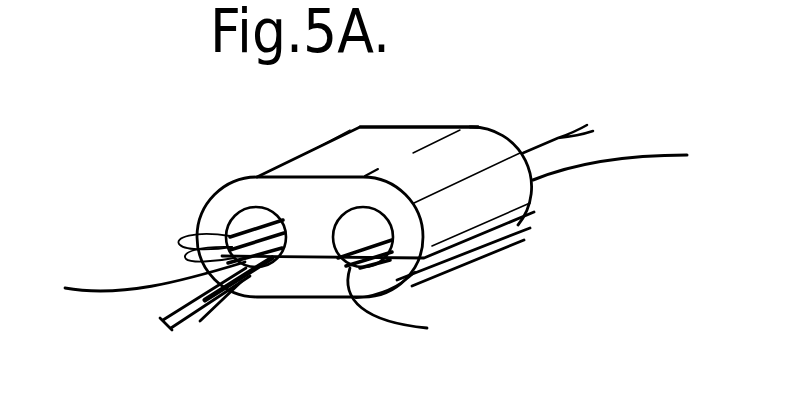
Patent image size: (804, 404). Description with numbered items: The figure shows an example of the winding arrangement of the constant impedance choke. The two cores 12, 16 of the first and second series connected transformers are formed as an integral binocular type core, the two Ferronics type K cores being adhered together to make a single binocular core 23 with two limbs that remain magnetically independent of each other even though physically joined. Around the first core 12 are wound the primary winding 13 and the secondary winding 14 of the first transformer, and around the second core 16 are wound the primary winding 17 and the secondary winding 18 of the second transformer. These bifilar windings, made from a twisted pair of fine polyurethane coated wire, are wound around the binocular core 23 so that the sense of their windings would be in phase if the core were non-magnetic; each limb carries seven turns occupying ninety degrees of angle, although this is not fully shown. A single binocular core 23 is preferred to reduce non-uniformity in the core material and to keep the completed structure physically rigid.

The core 12 is at (211, 222).
The primary winding 13 is at (88, 296).
The secondary winding 14 is at (200, 321).
The core 16 is at (413, 283).
The primary winding 17 is at (411, 330).
The secondary winding 18 is at (163, 322).
The binocular core 23 is at (424, 133).